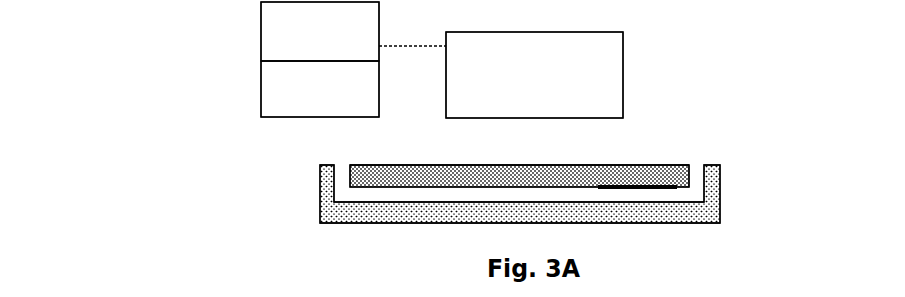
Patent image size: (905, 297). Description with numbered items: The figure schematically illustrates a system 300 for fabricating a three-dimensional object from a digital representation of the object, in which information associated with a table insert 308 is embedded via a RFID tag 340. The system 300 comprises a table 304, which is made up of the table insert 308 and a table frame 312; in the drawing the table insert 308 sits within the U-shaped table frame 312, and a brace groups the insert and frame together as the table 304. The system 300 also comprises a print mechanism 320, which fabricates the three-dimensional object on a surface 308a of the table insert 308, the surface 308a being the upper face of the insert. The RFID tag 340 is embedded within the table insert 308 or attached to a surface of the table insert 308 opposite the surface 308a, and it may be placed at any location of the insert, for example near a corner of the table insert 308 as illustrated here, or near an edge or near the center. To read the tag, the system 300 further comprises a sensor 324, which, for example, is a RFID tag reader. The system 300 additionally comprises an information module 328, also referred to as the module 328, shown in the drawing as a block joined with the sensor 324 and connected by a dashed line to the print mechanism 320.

The system 300 is at (703, 75).
The information module 328 is at (320, 31).
The sensor 324 is at (320, 89).
The print mechanism 320 is at (534, 75).
The table 304 is at (122, 215).
The table insert 308 is at (350, 175).
The surface 308a is at (423, 165).
The table frame 312 is at (320, 207).
The RFID tag 340 is at (660, 185).